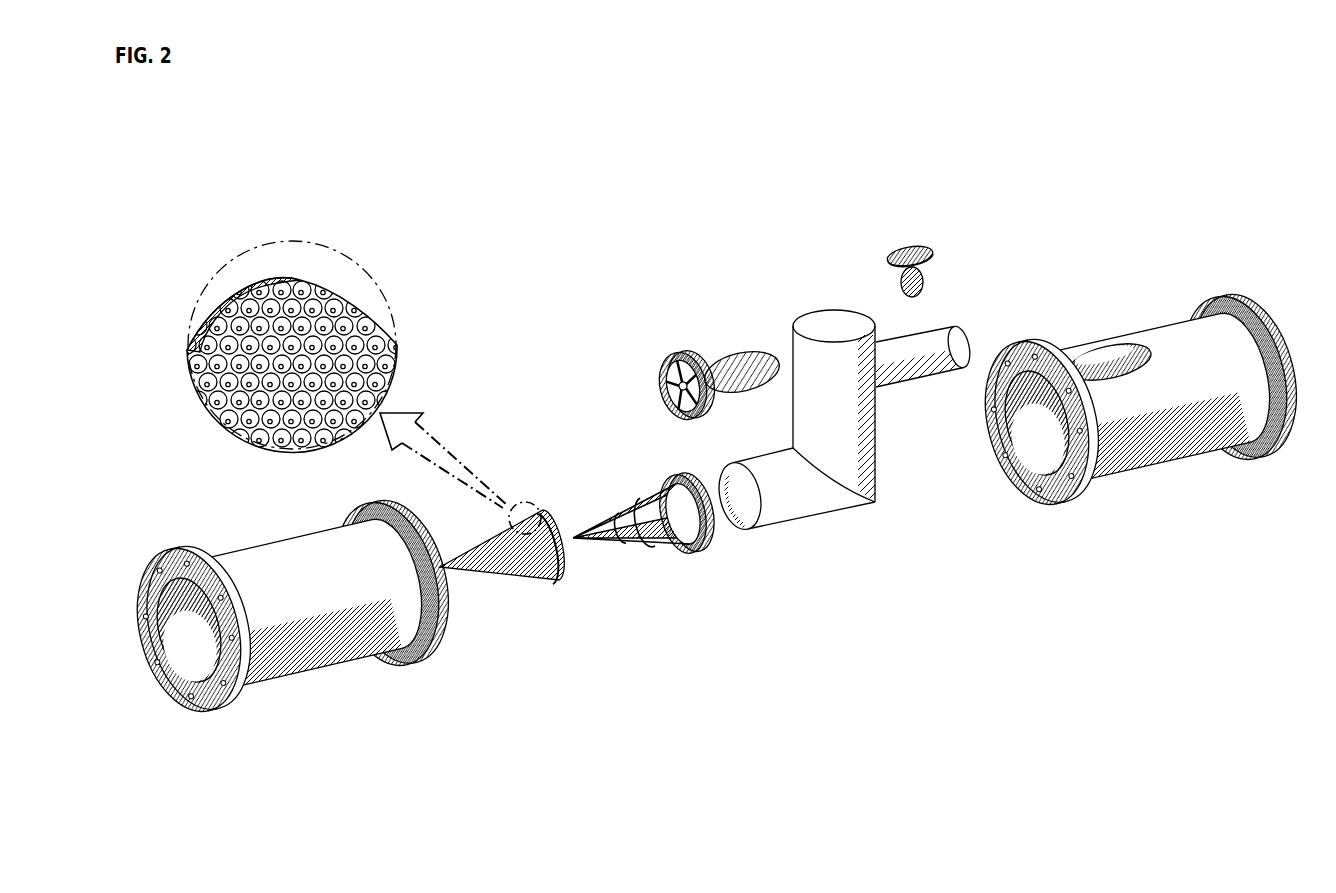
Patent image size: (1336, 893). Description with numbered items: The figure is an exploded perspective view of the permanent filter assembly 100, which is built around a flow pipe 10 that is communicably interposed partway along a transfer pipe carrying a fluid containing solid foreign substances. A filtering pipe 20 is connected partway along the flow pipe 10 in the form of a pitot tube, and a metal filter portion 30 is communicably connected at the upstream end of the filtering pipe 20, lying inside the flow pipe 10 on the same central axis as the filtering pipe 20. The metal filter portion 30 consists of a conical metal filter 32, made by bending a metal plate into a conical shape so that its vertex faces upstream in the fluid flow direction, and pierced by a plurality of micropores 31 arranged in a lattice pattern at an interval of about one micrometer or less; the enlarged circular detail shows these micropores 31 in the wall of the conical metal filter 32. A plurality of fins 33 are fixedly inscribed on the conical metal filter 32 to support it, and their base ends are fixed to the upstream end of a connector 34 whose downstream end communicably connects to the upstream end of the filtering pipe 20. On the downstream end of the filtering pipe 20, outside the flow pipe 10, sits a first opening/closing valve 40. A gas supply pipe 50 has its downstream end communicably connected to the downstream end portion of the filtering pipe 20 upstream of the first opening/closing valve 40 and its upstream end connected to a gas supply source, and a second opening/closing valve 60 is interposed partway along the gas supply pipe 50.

The flow pipe 10 is at (296, 661).
The filtering pipe 20 is at (810, 488).
The metal filter portion 30 is at (452, 420).
The micropores 31 is at (317, 283).
The conical metal filter 32 is at (276, 277).
The fins 33 is at (628, 540).
The connector 34 is at (696, 543).
The first opening/closing valve 40 is at (672, 352).
The gas supply pipe 50 is at (904, 375).
The second opening/closing valve 60 is at (907, 248).
The permanent filter assembly 100 is at (1045, 205).